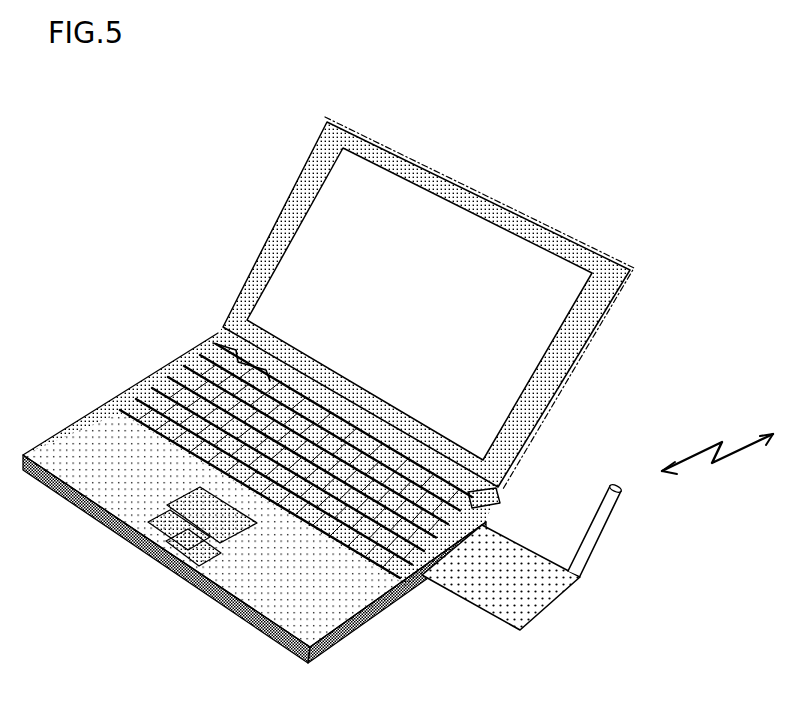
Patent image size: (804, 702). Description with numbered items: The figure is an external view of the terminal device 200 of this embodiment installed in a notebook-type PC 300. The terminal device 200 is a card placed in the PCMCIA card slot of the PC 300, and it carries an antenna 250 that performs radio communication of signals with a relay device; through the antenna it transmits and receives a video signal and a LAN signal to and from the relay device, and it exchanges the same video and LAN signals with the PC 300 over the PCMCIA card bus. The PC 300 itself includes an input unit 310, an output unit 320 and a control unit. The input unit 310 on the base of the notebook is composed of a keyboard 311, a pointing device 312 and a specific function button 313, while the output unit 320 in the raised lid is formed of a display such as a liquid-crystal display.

The terminal device 200 is at (550, 607).
The antenna 250 is at (607, 531).
The PC 300 is at (519, 216).
The input unit 310 is at (97, 437).
The keyboard 311 is at (148, 432).
The pointing device 312 is at (242, 533).
The specific function button 313 is at (476, 504).
The output unit 320 is at (402, 174).